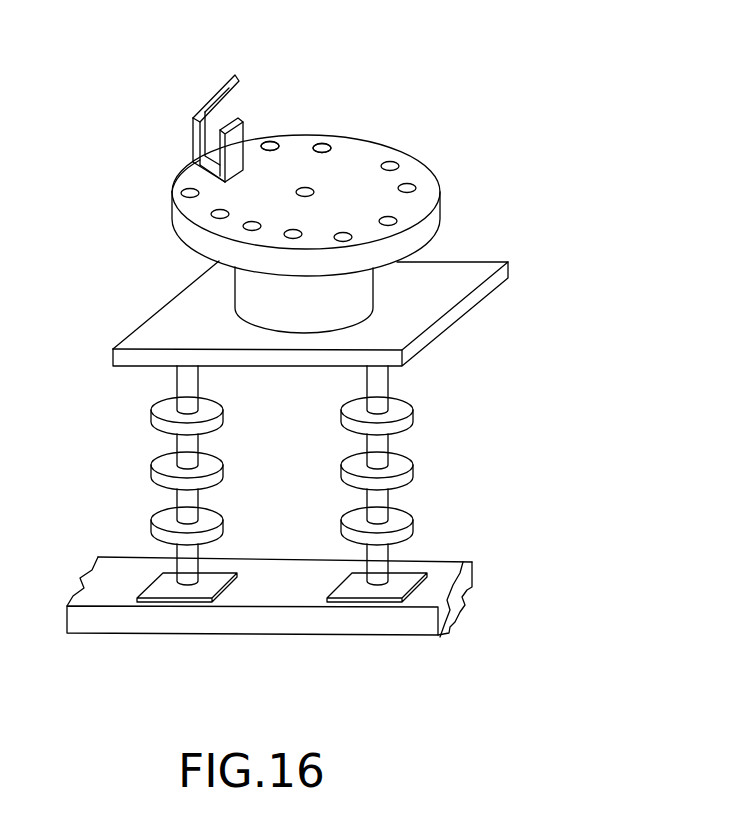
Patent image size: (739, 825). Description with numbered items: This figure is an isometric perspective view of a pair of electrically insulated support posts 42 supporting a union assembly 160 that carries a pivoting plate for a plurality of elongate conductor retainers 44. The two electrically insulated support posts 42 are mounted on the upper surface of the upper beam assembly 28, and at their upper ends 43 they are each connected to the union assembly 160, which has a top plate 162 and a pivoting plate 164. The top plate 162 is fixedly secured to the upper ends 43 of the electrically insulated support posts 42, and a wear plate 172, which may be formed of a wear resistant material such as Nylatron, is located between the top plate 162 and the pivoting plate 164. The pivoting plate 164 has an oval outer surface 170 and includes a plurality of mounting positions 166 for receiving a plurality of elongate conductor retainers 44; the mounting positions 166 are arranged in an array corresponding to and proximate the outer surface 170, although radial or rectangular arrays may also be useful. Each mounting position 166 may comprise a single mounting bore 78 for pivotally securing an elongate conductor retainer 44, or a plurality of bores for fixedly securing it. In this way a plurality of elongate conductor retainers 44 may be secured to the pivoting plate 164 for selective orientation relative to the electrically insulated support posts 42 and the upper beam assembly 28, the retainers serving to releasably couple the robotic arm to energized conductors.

The union assembly 160 is at (462, 77).
The pivoting plate 164 is at (438, 200).
The outer surface 170 is at (178, 220).
The mounting bore 78 is at (392, 160).
The mounting positions 166 is at (323, 135).
The elongate conductor retainer 44 is at (193, 122).
The wear plate 172 is at (373, 290).
The top plate 162 is at (457, 315).
The upper ends 43 is at (388, 378).
The electrically insulated support posts 42 is at (177, 500).
The upper beam assembly 28 is at (408, 635).